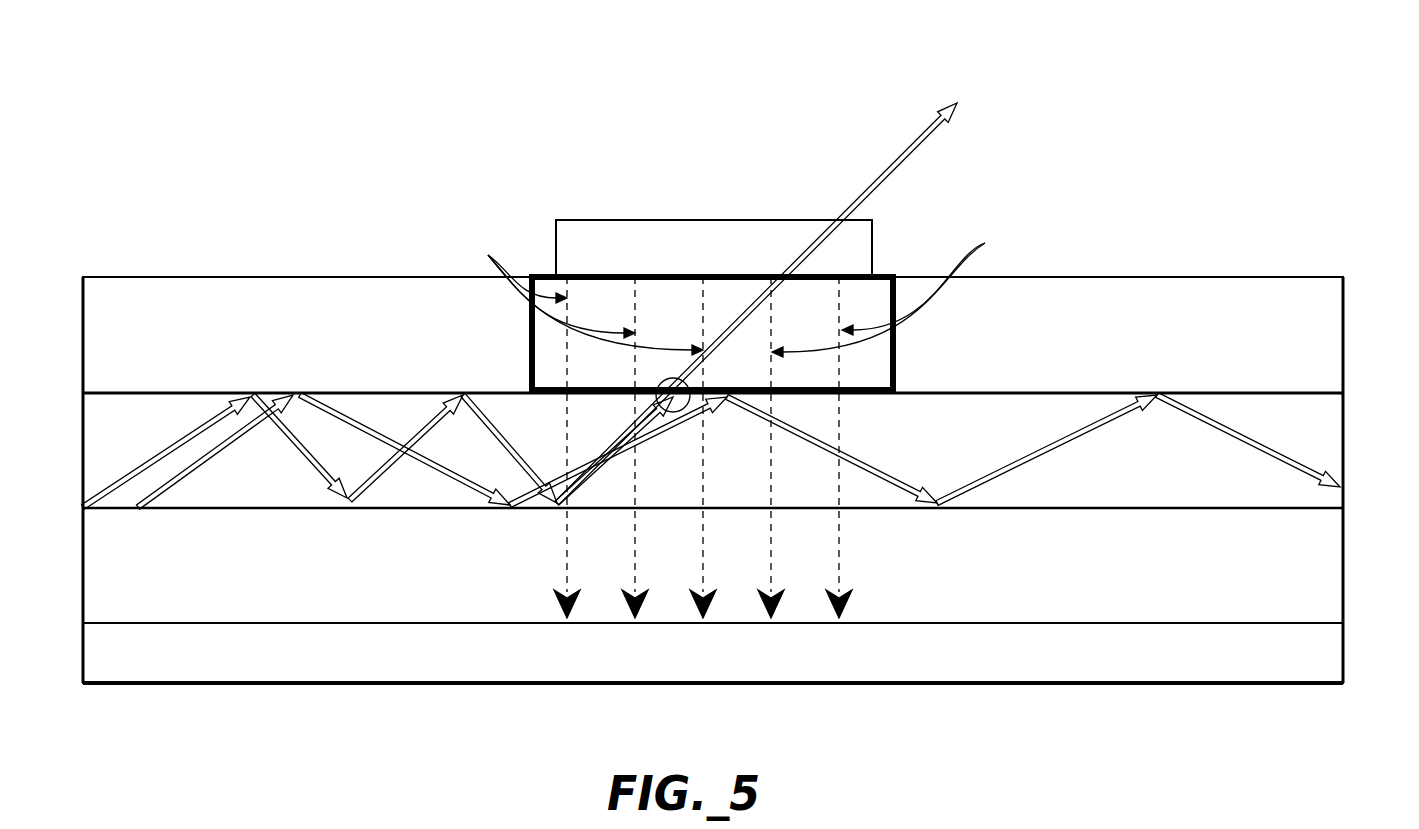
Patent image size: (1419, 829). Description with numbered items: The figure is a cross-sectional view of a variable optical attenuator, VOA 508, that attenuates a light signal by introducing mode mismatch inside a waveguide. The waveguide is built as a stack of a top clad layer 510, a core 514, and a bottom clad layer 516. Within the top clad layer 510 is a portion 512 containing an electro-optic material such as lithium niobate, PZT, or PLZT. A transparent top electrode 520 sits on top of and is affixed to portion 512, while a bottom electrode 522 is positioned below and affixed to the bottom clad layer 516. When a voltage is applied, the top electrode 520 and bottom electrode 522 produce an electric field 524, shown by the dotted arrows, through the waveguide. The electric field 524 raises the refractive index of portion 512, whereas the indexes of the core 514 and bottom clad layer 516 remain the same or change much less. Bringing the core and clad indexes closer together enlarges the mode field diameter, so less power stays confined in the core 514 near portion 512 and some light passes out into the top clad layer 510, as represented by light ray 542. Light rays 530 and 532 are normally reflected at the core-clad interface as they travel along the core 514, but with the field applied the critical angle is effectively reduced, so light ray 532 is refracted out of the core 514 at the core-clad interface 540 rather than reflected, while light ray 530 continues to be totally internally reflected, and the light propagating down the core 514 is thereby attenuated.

The VOA 508 is at (1217, 96).
The top clad layer 510 is at (1330, 325).
The portion 512 is at (877, 294).
The core 514 is at (1330, 440).
The bottom clad layer 516 is at (1330, 552).
The top electrode 520 is at (593, 226).
The bottom electrode 522 is at (1330, 645).
The electric field 524 is at (737, 293).
The light ray 530 is at (455, 478).
The light ray 532 is at (307, 458).
The core-clad interface 540 is at (668, 413).
The light ray 542 is at (926, 114).